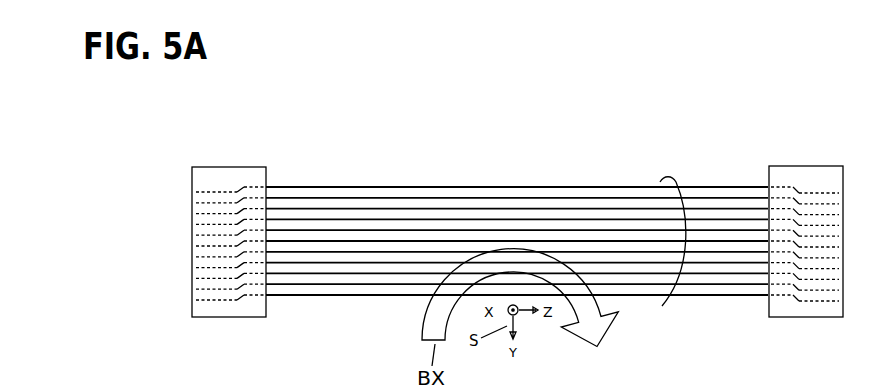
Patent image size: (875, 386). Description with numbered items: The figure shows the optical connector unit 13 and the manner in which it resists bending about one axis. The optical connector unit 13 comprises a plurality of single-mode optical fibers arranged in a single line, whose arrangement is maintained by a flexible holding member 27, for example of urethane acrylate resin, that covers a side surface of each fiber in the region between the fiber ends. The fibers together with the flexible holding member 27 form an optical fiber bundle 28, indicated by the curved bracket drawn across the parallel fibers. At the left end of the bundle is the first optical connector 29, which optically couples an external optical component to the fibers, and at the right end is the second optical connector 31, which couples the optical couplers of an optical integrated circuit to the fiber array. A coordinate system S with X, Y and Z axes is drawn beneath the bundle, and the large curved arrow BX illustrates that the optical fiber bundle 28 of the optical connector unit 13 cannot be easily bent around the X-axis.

The optical connector unit 13 is at (618, 150).
The flexible holding member 27 is at (330, 297).
The optical fiber bundle 28 is at (662, 306).
The first optical connector 29 is at (225, 318).
The second optical connector 31 is at (810, 318).